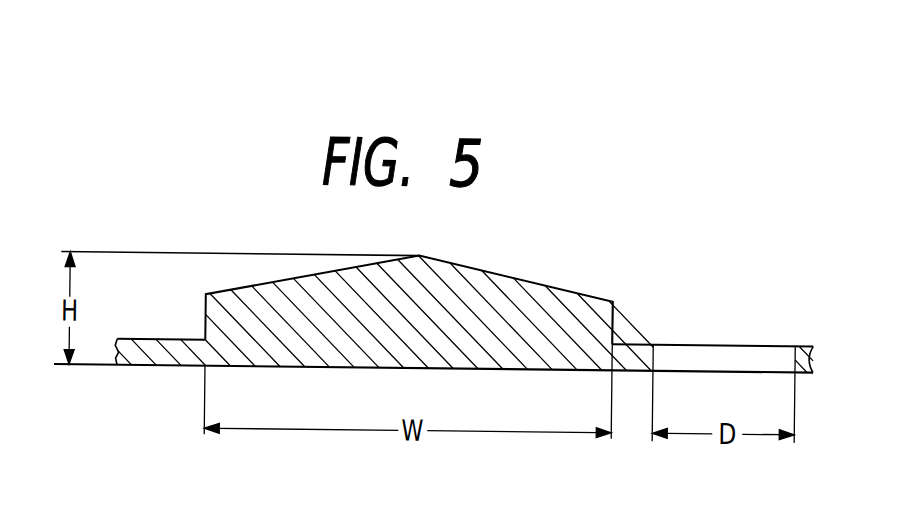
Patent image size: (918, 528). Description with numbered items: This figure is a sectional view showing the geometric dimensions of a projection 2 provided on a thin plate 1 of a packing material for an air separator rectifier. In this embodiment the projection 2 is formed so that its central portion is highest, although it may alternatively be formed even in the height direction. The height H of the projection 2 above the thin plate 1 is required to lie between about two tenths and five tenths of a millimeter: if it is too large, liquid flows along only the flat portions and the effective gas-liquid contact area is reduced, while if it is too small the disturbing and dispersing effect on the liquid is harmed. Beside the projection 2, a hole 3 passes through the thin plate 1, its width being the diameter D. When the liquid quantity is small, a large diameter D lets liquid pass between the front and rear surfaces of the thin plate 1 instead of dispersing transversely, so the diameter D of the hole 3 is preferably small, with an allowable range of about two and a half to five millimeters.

The thin plate 1 is at (147, 352).
The projection 2 is at (557, 285).
The hole 3 is at (710, 347).